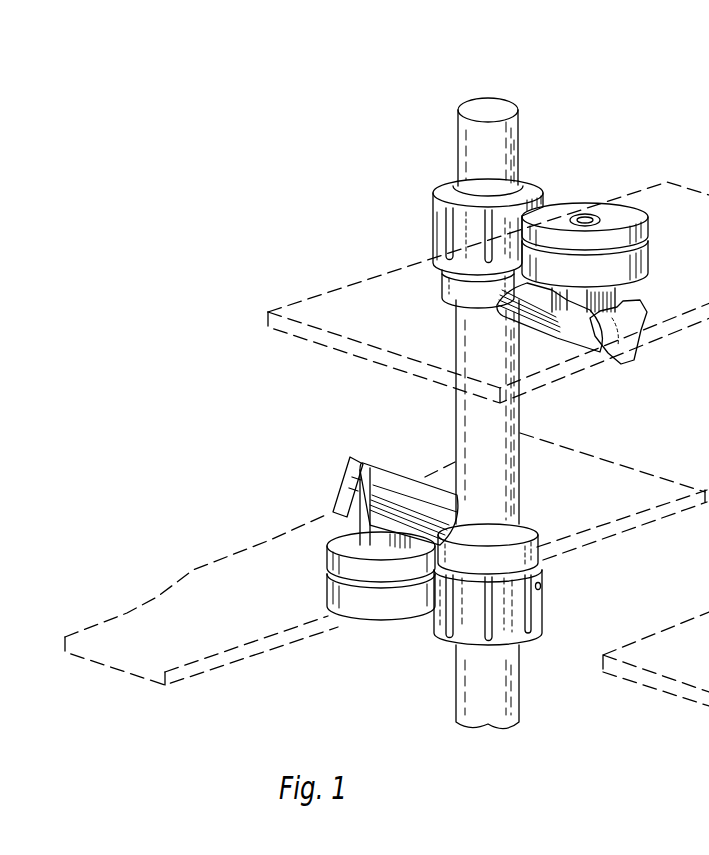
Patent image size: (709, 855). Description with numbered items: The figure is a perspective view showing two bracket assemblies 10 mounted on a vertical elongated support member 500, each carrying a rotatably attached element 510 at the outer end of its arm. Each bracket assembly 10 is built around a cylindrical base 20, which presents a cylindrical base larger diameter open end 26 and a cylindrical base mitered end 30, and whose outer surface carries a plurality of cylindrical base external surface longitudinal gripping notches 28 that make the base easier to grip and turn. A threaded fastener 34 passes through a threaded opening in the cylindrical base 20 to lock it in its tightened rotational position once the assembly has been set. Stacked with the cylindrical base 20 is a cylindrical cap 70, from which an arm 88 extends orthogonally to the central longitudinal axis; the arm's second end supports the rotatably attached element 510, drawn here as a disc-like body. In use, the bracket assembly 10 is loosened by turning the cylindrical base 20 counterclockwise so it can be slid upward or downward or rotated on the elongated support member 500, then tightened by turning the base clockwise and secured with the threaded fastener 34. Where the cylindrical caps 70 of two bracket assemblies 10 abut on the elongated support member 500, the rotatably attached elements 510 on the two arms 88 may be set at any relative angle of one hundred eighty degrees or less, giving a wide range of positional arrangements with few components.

The bracket assembly 10 is at (497, 387).
The cylindrical base 20 is at (491, 420).
The cylindrical base larger diameter open end 26 is at (438, 222).
The cylindrical base external surface longitudinal gripping notches 28 is at (455, 236).
The cylindrical base mitered end 30 is at (452, 180).
The threaded fastener 34 is at (542, 586).
The cylindrical cap 70 is at (442, 282).
The arm affixed to cylindrical cap portion orthogonally disposed to the central long 88 is at (540, 332).
The elongated support member 500 is at (457, 116).
The rotatably attached element 510 is at (576, 204).